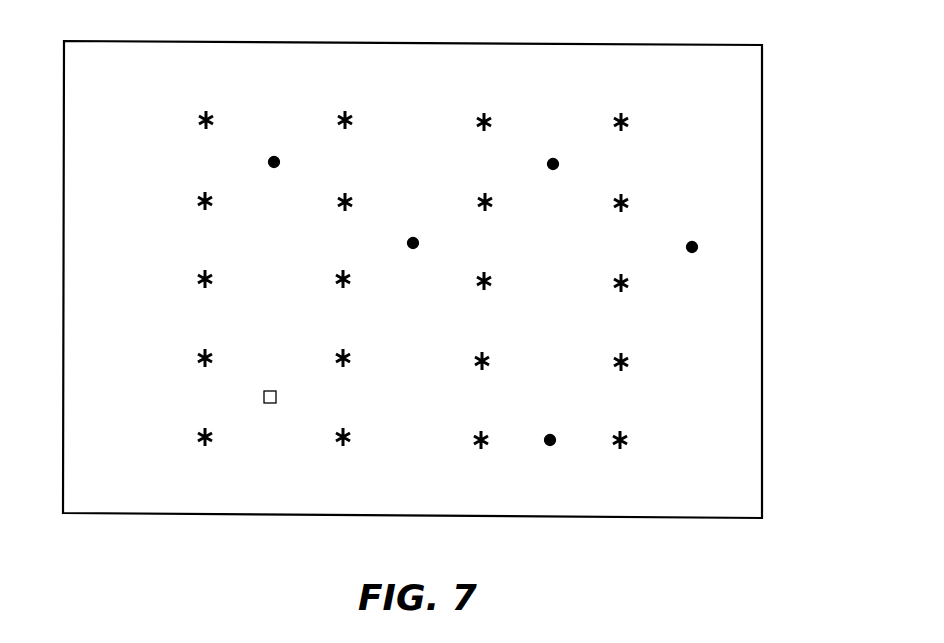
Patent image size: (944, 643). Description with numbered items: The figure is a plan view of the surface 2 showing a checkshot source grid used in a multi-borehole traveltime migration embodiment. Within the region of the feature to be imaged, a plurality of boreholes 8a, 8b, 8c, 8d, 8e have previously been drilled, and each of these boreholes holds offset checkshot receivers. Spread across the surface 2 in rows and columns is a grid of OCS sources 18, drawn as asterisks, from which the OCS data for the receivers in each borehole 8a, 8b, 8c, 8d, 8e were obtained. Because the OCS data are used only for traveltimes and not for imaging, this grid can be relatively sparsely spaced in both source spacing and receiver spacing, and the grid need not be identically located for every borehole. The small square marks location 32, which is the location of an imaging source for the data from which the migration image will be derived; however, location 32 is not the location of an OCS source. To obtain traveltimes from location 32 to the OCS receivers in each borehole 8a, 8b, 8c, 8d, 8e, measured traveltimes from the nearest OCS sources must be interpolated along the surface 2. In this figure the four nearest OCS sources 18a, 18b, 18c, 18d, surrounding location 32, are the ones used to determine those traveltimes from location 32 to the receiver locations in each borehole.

The surface 2 is at (714, 66).
The OCS sources 18 is at (337, 110).
The OCS source 18a is at (212, 355).
The OCS source 18b is at (350, 355).
The OCS source 18c is at (212, 440).
The OCS source 18d is at (350, 440).
The borehole 8a is at (279, 160).
The borehole 8b is at (418, 241).
The borehole 8c is at (558, 162).
The borehole 8d is at (697, 245).
The borehole 8e is at (555, 438).
The location 32 is at (277, 396).